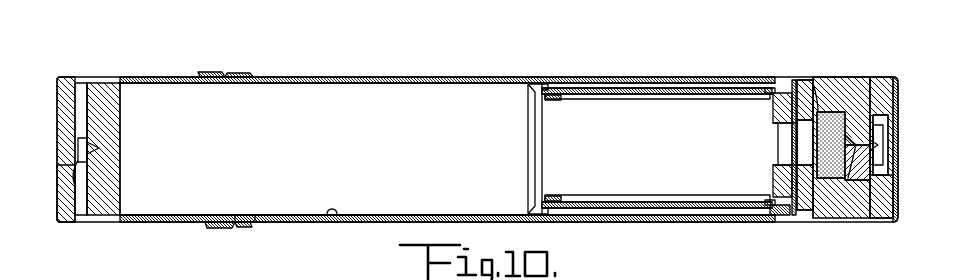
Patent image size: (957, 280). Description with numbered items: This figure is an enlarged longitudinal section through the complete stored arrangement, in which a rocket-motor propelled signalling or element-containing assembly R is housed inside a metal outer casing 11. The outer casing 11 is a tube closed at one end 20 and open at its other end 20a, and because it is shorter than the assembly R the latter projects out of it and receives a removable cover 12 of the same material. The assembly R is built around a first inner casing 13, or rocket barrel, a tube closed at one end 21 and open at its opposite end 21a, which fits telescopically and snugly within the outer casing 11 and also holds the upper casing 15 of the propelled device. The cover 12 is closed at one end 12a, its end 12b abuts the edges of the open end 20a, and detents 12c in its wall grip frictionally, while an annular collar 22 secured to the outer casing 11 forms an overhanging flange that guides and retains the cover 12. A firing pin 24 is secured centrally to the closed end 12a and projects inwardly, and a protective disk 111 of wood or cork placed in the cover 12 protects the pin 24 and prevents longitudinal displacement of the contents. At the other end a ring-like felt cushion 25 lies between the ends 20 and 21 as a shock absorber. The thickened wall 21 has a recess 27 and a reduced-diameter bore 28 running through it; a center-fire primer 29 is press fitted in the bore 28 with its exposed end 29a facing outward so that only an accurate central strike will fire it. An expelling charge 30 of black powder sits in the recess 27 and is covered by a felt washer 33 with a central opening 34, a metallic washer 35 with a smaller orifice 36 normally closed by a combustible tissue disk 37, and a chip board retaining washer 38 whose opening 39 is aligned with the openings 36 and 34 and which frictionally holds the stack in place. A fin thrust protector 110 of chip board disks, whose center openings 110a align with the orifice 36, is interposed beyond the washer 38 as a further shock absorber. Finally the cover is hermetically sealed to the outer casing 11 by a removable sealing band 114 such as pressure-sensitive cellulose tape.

The cover 12 is at (121, 225).
The closed end of cover 12a is at (57, 96).
The cover end 12b is at (229, 229).
The detents 12c is at (186, 223).
The first inner casing 13 is at (334, 224).
The upper casing 15 is at (385, 105).
The outer casing 11 is at (599, 76).
The closed end of outer casing 20 is at (899, 99).
The open end of outer casing 20a is at (241, 229).
The closed end wall of inner casing 21 is at (849, 79).
The open end of inner casing 21a is at (63, 224).
The annular collar 22 is at (251, 72).
The firing pin 24 is at (62, 179).
The ring-like cushion 25 is at (899, 80).
The recess 27 is at (836, 185).
The bore 28 is at (880, 126).
The primer 29 is at (899, 194).
The exposed end of primer 29a is at (881, 146).
The expelling charge 30 is at (822, 112).
The washer 33 is at (808, 80).
The central opening 34 is at (777, 216).
The metallic washer 35 is at (797, 85).
The orifice 36 is at (796, 142).
The disk 37 is at (790, 128).
The retaining washer 38 is at (790, 86).
The opening 39 is at (790, 158).
The fin thrust protector 110 is at (791, 216).
The center openings 110a is at (792, 124).
The protective disk 111 is at (85, 225).
The sealing band 114 is at (209, 72).
The rocket-motor propelled signalling or element-containing assembly R is at (514, 102).